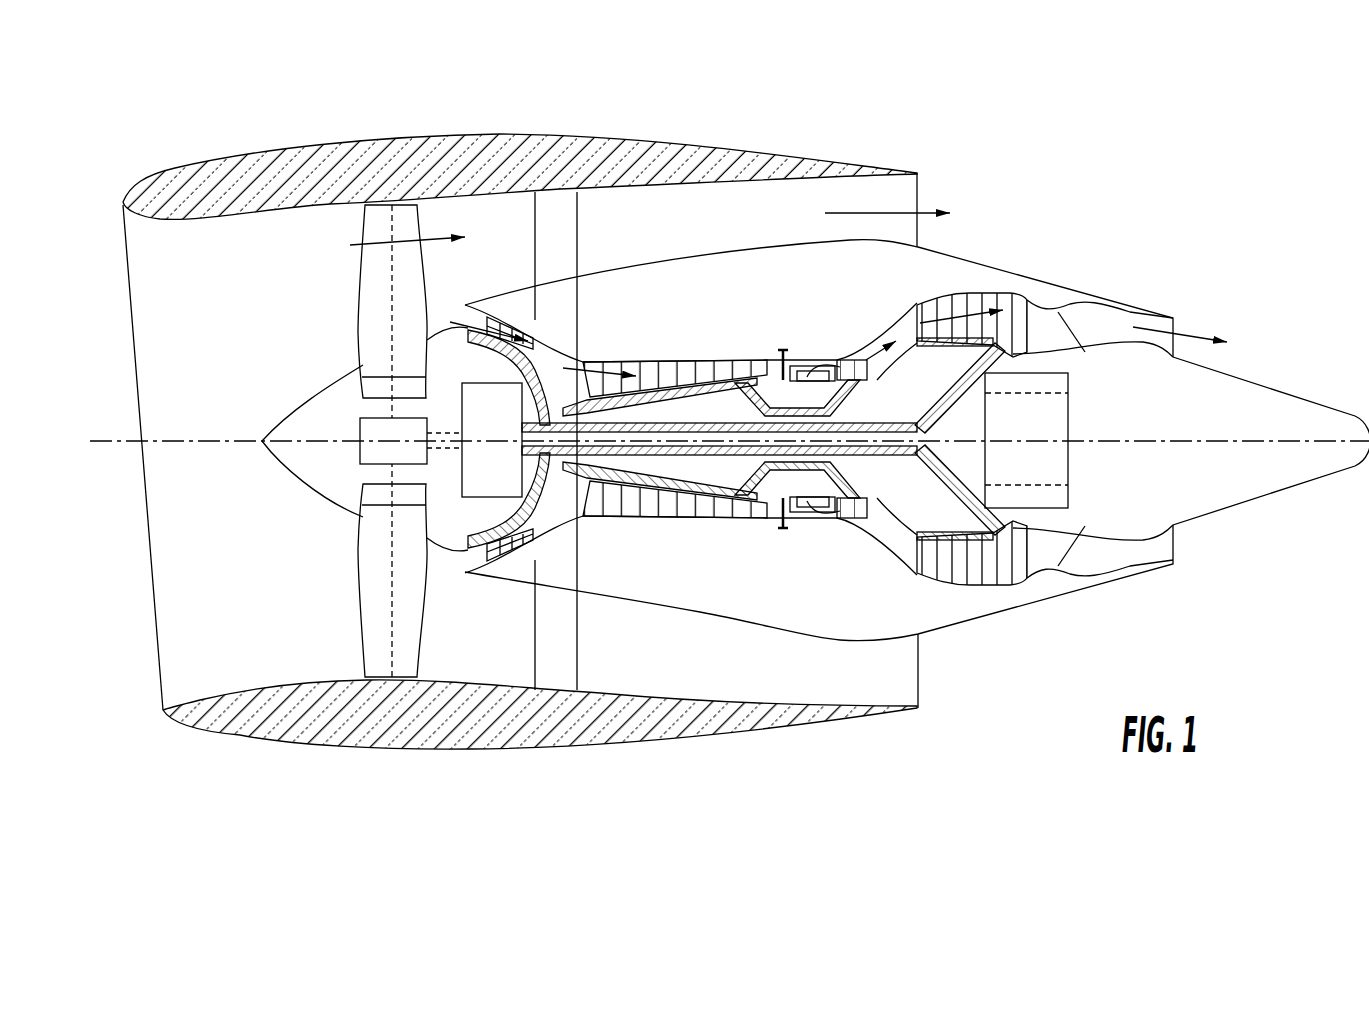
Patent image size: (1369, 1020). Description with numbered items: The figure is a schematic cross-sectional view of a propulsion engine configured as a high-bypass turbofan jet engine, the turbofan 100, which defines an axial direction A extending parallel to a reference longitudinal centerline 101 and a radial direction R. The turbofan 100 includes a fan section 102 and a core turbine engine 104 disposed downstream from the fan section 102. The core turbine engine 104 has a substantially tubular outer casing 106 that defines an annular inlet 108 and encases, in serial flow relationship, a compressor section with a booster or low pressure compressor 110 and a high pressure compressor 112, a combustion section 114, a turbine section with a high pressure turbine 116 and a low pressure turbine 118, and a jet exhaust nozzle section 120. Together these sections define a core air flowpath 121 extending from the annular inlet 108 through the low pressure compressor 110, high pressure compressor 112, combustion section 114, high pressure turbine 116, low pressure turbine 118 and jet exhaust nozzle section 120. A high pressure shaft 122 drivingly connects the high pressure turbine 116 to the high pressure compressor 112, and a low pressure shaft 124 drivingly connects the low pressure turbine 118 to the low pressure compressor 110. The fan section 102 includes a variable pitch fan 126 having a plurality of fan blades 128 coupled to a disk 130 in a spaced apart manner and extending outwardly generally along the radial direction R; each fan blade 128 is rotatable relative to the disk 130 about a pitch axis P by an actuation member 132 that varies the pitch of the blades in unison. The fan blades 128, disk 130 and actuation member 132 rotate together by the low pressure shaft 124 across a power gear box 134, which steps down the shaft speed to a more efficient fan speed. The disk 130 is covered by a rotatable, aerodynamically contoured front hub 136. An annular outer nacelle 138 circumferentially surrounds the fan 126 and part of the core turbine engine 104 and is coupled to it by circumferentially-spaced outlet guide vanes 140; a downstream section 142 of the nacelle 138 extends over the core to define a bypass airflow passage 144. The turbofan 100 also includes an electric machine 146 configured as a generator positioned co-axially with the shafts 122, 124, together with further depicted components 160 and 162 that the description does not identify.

The turbofan 100 is at (1078, 145).
The longitudinal centerline 101 is at (1140, 437).
The fan section 102 is at (313, 222).
The core turbine engine 104 is at (690, 300).
The outer casing 106 is at (760, 627).
The annular inlet 108 is at (483, 557).
The low pressure compressor 110 is at (508, 580).
The high pressure compressor 112 is at (612, 502).
The combustion section 114 is at (803, 513).
The high pressure turbine 116 is at (873, 523).
The low pressure turbine 118 is at (1010, 592).
The jet exhaust nozzle section 120 is at (1077, 557).
The core air flowpath 121 is at (560, 520).
The high pressure shaft 122 is at (807, 413).
The low pressure shaft 124 is at (953, 385).
The variable pitch fan 126 is at (320, 500).
The fan blades 128 is at (360, 610).
The disk 130 is at (380, 390).
The actuation member 132 is at (358, 420).
The power gear box 134 is at (528, 400).
The front hub 136 is at (277, 460).
The outer nacelle 138 is at (415, 752).
The outlet guide vanes 140 is at (578, 226).
The downstream section 142 is at (832, 160).
The bypass airflow passage 144 is at (786, 228).
The electric machine 146 is at (1078, 362).
The tail bearing housing 160 is at (1060, 470).
The housing bore 162 is at (1060, 500).
The pitch axis P is at (393, 227).
The radial direction R is at (38, 282).
The axial direction A is at (477, 816).